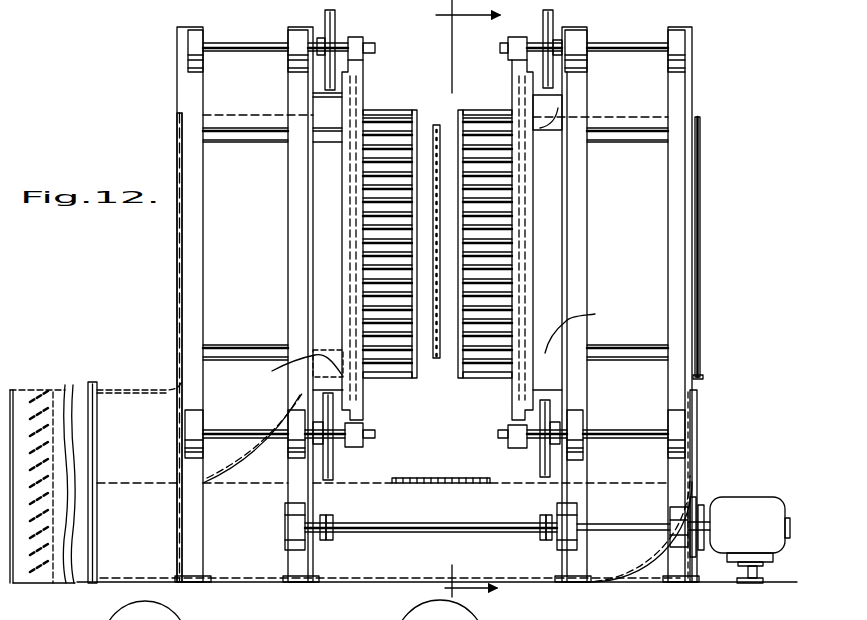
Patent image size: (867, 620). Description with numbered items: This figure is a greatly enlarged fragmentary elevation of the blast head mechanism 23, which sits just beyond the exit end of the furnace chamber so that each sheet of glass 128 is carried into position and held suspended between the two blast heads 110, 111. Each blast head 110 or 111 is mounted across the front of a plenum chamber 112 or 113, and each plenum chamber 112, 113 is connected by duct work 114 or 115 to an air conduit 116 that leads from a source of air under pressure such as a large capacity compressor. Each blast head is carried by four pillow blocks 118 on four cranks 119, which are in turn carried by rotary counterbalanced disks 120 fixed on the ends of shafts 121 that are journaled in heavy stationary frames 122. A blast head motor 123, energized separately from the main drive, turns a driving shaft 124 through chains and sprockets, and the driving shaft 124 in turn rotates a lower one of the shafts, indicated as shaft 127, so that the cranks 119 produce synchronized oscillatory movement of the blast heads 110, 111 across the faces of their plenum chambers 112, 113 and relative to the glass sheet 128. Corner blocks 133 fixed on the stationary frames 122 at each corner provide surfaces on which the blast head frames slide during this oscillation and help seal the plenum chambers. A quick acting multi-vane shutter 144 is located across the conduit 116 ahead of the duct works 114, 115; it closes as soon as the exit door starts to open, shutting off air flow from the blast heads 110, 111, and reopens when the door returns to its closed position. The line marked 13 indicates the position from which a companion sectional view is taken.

The section line 13- 13 is at (473, 307).
The blast head mechanism 23 is at (703, 262).
The blast head 110 is at (490, 380).
The blast head 111 is at (388, 380).
The plenum chamber 112 is at (647, 224).
The plenum chamber 113 is at (233, 265).
The duct work 114 is at (698, 440).
The duct work 115 is at (143, 388).
The air conduit 116 is at (27, 585).
The pillow block 118 is at (360, 38).
The crank 119 is at (340, 40).
The rotary counterbalanced disk 120 is at (326, 18).
The shaft 121 is at (212, 48).
The stationary frame 122 is at (180, 220).
The blast head motor 123 is at (718, 556).
The driving shaft 124 is at (560, 532).
The lower shaft 127 is at (218, 430).
The sheet of glass 128 is at (440, 127).
The corner block 133 is at (435, 343).
The multi-vane shutter 144 is at (60, 395).